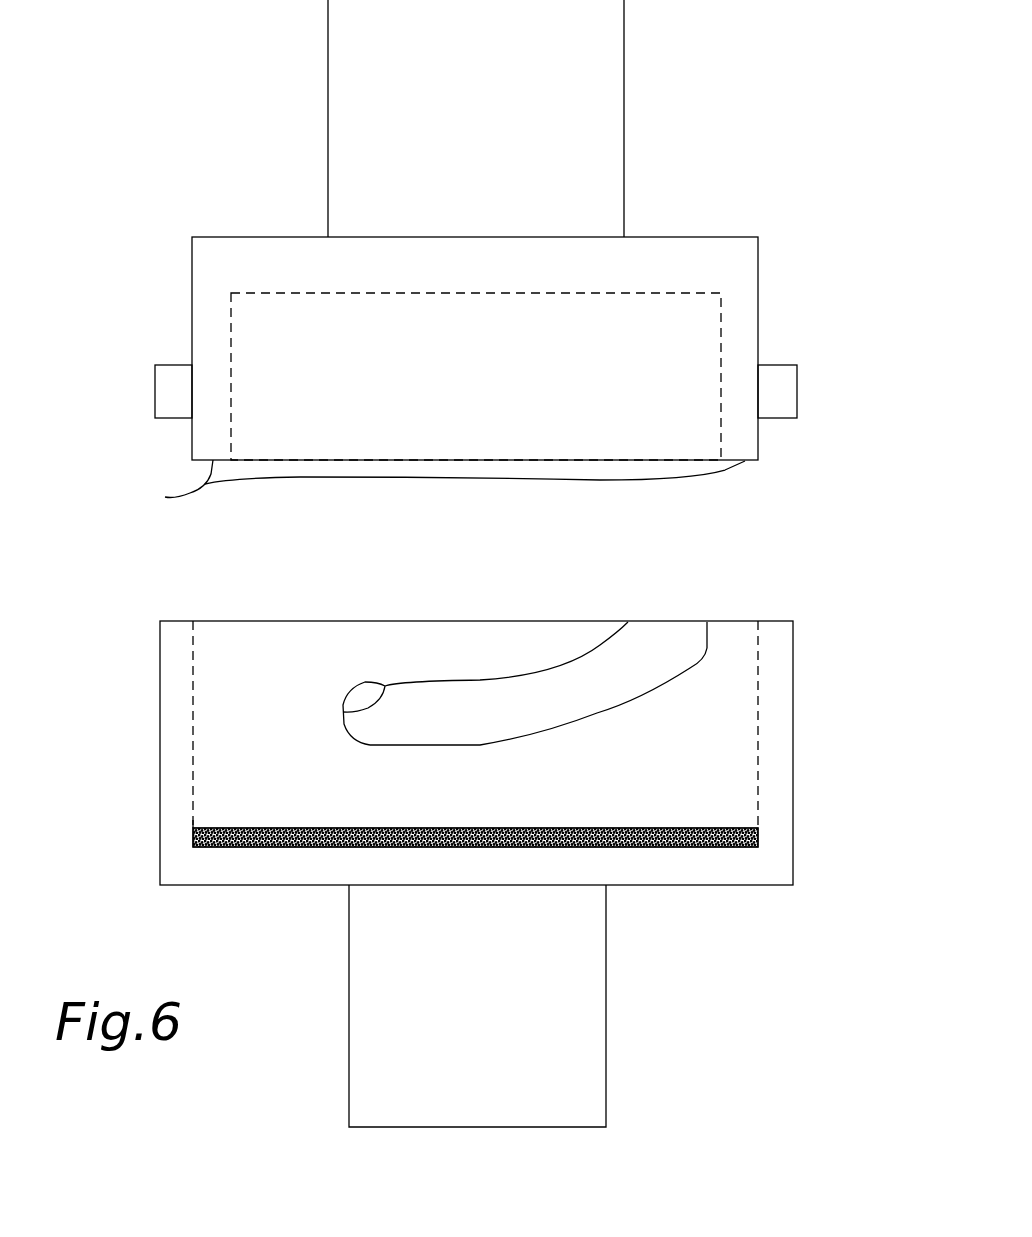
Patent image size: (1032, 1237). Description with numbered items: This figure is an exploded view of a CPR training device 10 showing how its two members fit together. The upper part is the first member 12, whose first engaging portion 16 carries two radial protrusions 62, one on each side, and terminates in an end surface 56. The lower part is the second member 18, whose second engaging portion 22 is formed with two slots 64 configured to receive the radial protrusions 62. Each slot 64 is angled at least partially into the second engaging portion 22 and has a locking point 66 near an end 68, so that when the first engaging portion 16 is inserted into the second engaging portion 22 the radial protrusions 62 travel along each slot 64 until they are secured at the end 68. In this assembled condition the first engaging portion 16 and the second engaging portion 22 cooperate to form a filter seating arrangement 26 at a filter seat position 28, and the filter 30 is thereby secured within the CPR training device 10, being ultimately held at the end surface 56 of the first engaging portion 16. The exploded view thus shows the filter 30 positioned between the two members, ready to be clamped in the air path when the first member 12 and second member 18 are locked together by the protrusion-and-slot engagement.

The CPR training device 10 is at (802, 96).
The first member 12 is at (742, 187).
The first engaging portion 16 is at (740, 340).
The second member 18 is at (850, 888).
The second engaging portion 22 is at (778, 798).
The filter seating arrangement 26 is at (185, 823).
The filter seat position 28 is at (193, 833).
The filter 30 is at (755, 838).
The end surface 56 is at (421, 490).
The radial protrusion 62 is at (170, 388).
The slot 64 is at (632, 661).
The locking point 66 is at (340, 712).
The end 68 is at (353, 698).